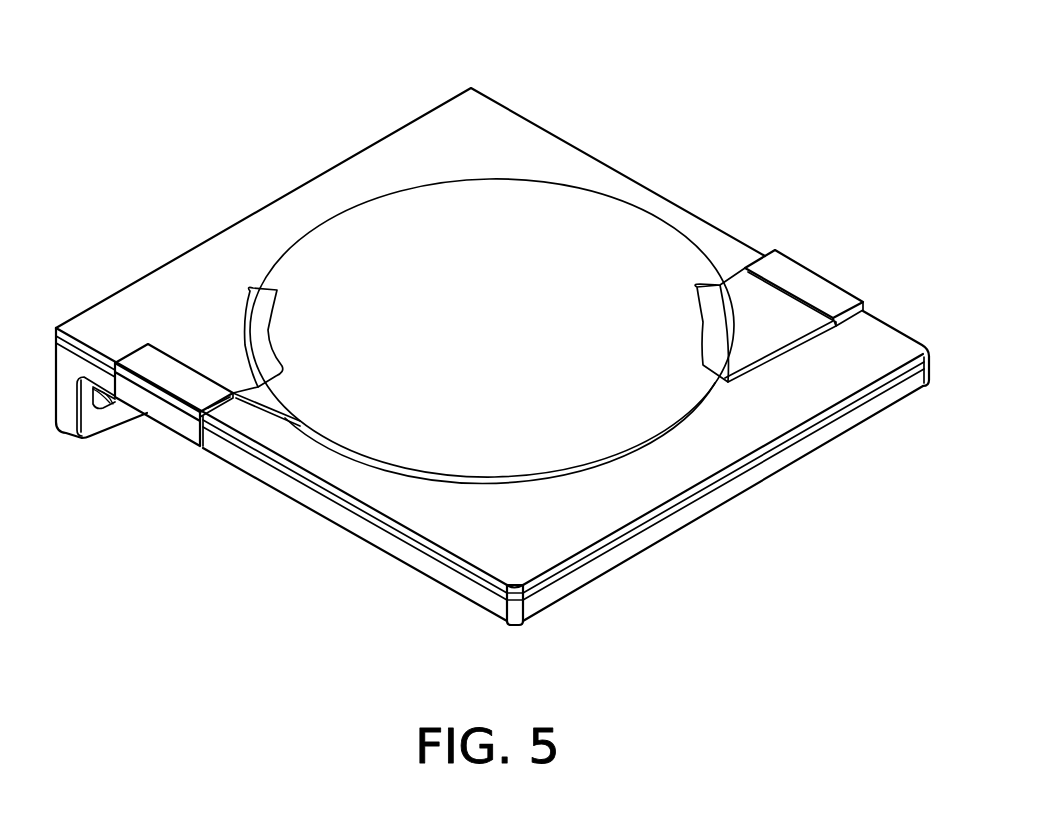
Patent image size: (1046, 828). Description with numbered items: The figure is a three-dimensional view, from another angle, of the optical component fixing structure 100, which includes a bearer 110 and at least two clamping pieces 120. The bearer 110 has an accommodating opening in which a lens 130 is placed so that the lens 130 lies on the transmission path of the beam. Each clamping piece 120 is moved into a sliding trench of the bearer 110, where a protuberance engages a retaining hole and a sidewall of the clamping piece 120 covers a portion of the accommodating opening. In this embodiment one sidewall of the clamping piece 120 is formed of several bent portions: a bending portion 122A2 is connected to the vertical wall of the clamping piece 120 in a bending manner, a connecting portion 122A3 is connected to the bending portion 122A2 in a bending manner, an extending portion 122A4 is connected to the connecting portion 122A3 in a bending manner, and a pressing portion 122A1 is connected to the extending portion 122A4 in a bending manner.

The optical component fixing structure 100 is at (284, 76).
The bearer 110 is at (524, 97).
The clamping piece 120 is at (818, 260).
The lens 130 is at (603, 243).
The pressing portion 122A1 is at (262, 325).
The bending portion 122A2 is at (140, 360).
The connecting portion 122A3 is at (842, 300).
The extending portion 122A4 is at (190, 338).